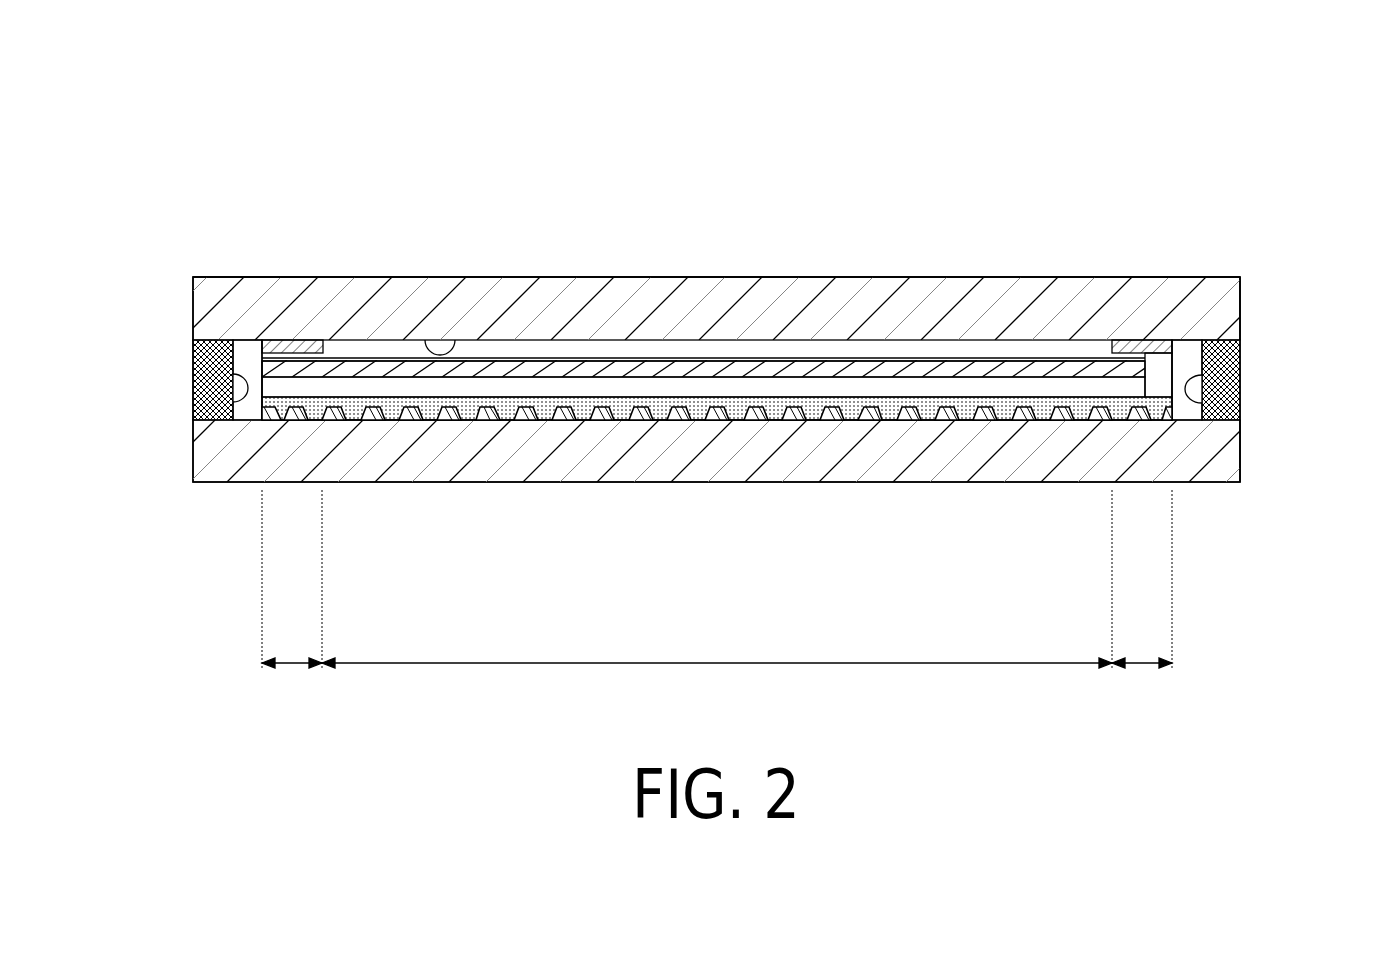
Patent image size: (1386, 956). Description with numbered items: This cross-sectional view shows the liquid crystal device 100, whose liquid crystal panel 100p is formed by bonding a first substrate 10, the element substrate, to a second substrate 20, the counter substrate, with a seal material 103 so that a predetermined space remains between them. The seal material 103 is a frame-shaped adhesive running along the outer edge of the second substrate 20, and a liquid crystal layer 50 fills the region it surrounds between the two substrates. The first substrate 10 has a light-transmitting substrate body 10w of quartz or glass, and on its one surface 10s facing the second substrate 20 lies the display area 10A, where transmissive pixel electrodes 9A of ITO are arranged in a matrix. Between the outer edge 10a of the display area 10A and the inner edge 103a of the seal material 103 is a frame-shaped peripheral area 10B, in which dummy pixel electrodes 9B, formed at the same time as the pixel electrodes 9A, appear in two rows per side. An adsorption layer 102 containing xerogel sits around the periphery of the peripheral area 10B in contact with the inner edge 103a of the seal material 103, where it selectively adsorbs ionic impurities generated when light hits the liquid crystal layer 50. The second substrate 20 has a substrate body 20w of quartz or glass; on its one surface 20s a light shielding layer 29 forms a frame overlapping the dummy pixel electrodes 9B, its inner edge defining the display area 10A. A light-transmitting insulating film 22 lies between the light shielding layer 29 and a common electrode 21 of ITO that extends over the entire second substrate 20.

The liquid crystal device 100 is at (1050, 172).
The liquid crystal panel 100p is at (897, 274).
The first substrate 10 is at (768, 486).
The outer edge of display area 10a is at (268, 274).
The substrate body 10w is at (1240, 457).
The one surface of first substrate 10s is at (421, 420).
The display area 10A is at (717, 681).
The peripheral area 10B is at (717, 597).
The second substrate 20 is at (749, 274).
The substrate body 20w is at (1240, 317).
The one surface of second substrate 20s is at (445, 328).
The common electrode 21 is at (660, 360).
The insulating film 22 is at (548, 356).
The light shielding layer 29 is at (300, 346).
The liquid crystal layer 50 is at (870, 380).
The pixel electrodes 9A is at (642, 420).
The dummy pixel electrodes 9B is at (298, 420).
The adsorption layer 102 is at (247, 357).
The seal material 103 is at (205, 365).
The inner edge of seal material 103a is at (240, 402).